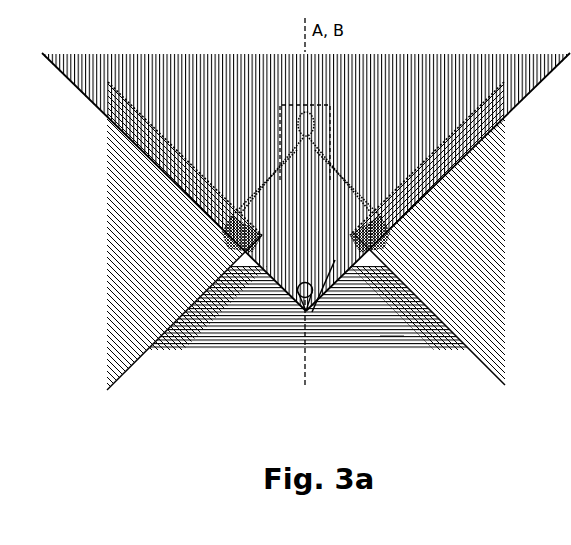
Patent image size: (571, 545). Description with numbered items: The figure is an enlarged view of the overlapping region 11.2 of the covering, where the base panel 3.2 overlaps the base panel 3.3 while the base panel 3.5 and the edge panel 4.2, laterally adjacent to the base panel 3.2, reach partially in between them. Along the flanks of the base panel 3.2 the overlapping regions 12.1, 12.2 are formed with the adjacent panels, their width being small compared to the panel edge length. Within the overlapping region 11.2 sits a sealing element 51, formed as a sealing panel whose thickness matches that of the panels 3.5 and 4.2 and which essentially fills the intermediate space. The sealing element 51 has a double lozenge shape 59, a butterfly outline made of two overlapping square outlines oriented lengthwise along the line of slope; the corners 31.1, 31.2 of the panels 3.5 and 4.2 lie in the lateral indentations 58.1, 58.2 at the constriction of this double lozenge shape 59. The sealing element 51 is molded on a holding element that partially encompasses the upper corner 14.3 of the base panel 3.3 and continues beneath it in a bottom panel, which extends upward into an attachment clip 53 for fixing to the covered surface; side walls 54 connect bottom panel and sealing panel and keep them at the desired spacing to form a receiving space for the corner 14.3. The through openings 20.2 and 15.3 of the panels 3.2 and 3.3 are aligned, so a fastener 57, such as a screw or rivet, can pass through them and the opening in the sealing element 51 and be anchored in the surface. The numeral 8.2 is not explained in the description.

The base panel 3.2 is at (183, 82).
The base panel 3.3 is at (413, 338).
The base panel 3.5 is at (477, 262).
The edge panel 4.2 is at (108, 258).
The tip / nozzle opening 8.2 is at (308, 313).
The overlapping region 11.2 is at (283, 262).
The overlapping region 12.1 is at (398, 200).
The overlapping region 12.2 is at (182, 178).
The upper corner 14.3 is at (303, 155).
The through opening 15.3 is at (312, 312).
The through opening 20.2 is at (304, 300).
The corner 31.1 is at (432, 279).
The corner 31.2 is at (228, 238).
The sealing element 51 is at (343, 278).
The attachment clip 53 is at (322, 133).
The side walls 54 is at (347, 183).
The fastener 57 is at (297, 288).
The lateral indentation 58.1 is at (400, 230).
The lateral indentation 58.2 is at (260, 234).
The double lozenge shape 59 is at (392, 340).